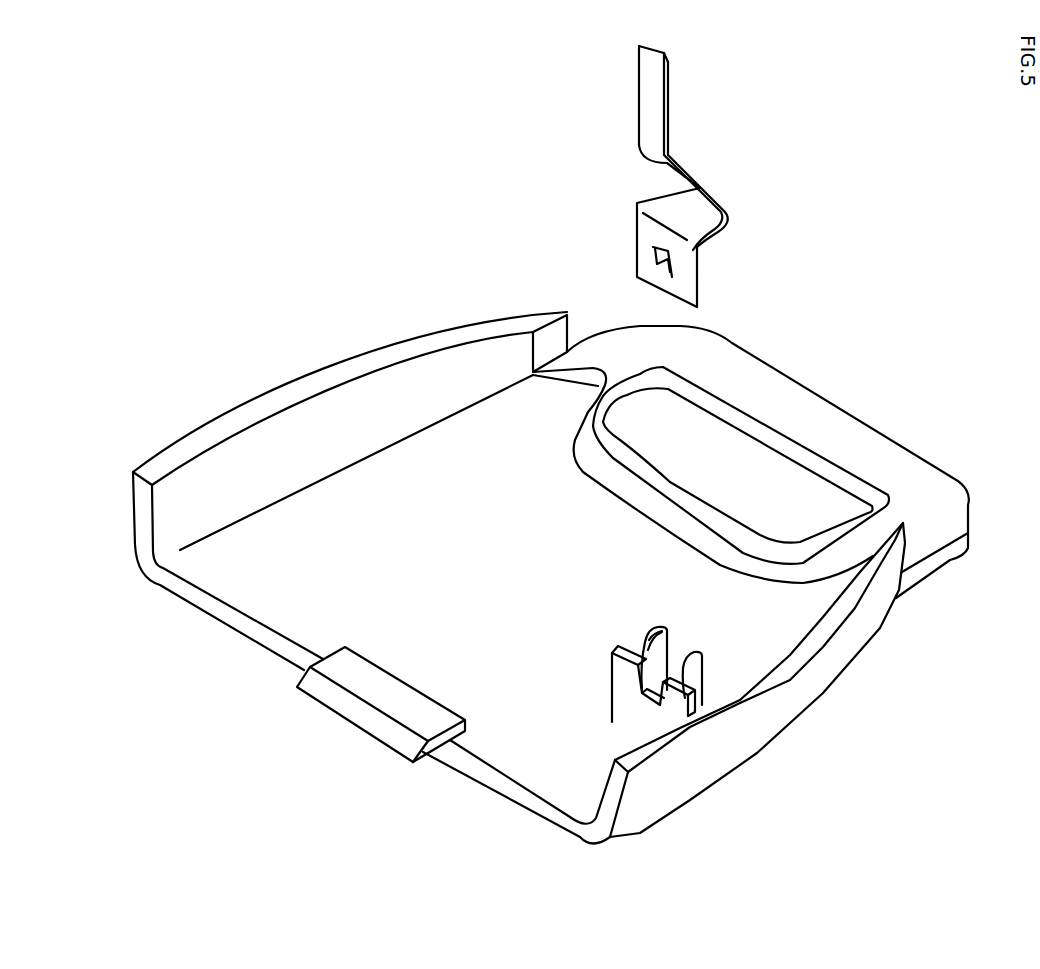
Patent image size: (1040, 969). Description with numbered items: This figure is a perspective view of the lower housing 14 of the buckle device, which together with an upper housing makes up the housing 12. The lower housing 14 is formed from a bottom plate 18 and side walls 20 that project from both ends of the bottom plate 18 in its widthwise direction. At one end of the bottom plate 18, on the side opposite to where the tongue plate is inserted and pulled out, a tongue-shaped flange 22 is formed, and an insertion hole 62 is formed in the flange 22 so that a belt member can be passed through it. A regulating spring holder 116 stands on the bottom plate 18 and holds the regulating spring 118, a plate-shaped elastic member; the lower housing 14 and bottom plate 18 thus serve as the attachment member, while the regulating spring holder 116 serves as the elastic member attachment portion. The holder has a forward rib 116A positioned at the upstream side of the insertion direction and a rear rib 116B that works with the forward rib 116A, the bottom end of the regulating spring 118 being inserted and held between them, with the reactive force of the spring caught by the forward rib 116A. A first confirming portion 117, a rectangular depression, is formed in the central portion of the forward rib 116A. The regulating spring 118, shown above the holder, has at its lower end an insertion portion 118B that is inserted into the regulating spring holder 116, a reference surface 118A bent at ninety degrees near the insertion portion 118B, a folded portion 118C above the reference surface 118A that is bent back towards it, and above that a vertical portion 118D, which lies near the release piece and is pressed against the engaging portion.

The housing 12 is at (558, 580).
The lower housing 14 is at (558, 580).
The bottom plate 18 is at (375, 547).
The side walls 20 is at (338, 446).
The flange 22 is at (758, 462).
The insertion hole 62 is at (760, 425).
The regulating spring holder 116 is at (646, 659).
The forward rib 116A is at (637, 717).
The rear rib 116B is at (660, 645).
The first confirming portion 117 is at (631, 611).
The regulating spring 118 is at (661, 176).
The reference surface 118A is at (680, 213).
The insertion portion 118B is at (700, 266).
The folded portion 118C is at (704, 193).
The vertical portion 118D is at (668, 102).